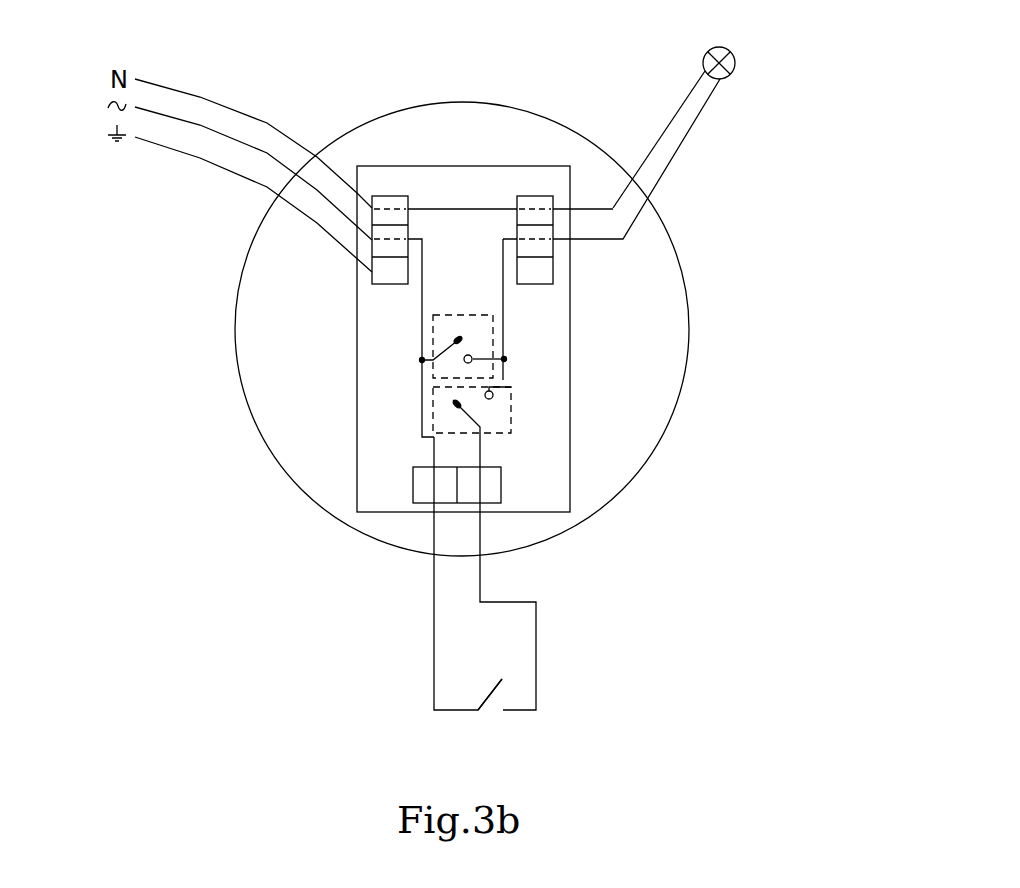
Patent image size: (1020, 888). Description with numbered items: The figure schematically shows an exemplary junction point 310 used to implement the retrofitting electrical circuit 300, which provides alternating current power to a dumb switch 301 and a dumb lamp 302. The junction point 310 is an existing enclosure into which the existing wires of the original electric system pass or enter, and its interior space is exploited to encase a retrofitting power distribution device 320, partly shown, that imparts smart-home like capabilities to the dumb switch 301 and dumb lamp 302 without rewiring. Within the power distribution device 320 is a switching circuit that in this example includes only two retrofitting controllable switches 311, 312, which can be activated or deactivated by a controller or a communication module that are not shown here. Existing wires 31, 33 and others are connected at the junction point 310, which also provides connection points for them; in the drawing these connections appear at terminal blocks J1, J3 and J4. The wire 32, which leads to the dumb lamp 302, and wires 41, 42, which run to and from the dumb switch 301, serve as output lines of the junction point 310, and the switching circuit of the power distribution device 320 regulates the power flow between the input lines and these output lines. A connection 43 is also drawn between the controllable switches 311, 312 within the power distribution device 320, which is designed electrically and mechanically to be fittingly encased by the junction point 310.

The wire 33 is at (460, 208).
The wire 32 is at (676, 153).
The dumb lamp 302 is at (723, 48).
The wire 31 is at (422, 331).
The controllable switch 312 is at (447, 316).
The controllable switch 311 is at (496, 398).
The connection line 43 is at (422, 376).
The wire 41 is at (422, 398).
The wire 42 is at (536, 657).
The dumb switch 301 is at (490, 697).
The junction point 310 is at (237, 325).
The electrical circuit 300 is at (570, 473).
The power distribution device 320 is at (404, 513).
The terminal block J1 is at (390, 254).
The terminal block J3 is at (535, 254).
The terminal block J4 is at (469, 485).